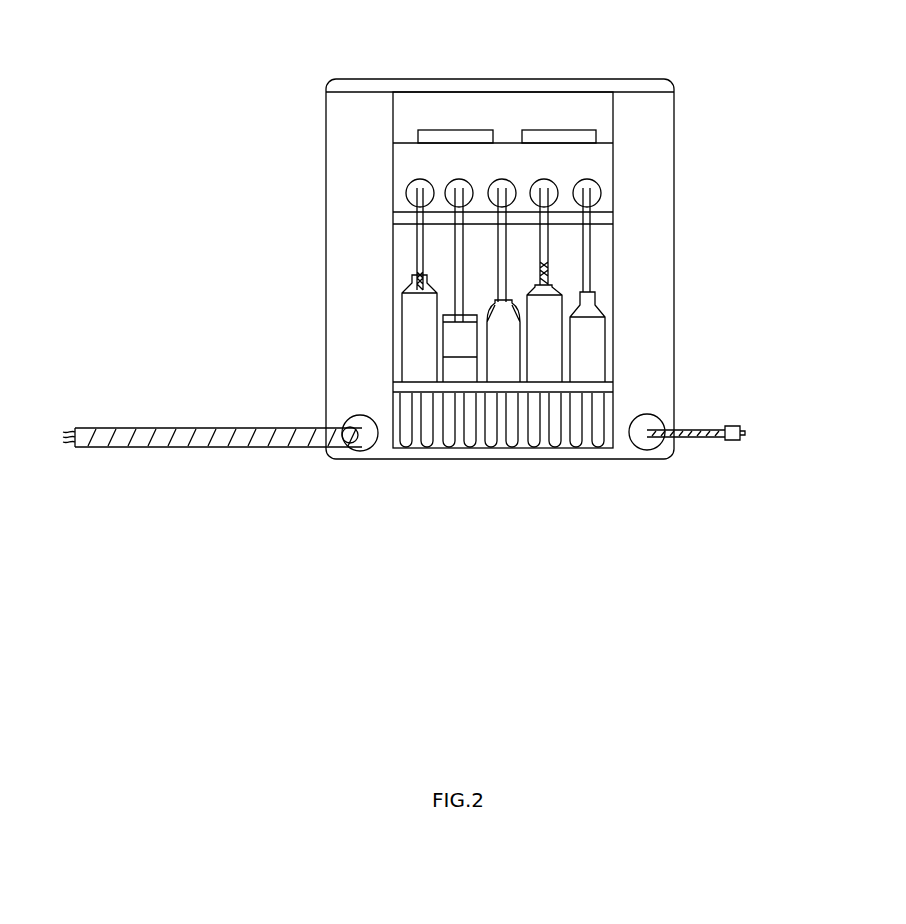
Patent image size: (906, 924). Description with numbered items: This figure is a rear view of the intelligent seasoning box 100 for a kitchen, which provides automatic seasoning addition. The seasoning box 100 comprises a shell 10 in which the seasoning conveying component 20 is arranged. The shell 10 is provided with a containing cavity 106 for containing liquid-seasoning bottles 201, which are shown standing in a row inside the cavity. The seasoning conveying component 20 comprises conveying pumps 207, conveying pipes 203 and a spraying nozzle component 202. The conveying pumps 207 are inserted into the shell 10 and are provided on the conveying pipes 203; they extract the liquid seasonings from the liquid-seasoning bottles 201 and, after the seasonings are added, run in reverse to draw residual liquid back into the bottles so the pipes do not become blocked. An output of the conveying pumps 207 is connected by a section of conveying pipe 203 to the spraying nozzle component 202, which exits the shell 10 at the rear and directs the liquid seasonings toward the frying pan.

The seasoning box 100 is at (545, 33).
The shell 10 is at (647, 162).
The containing cavity 106 is at (567, 277).
The liquid-seasoning bottles 201 is at (507, 435).
The conveying pumps 207 is at (417, 182).
The seasoning conveying component 20 is at (110, 360).
The spraying nozzle component 202 is at (115, 374).
The conveying pipes 203 is at (245, 425).